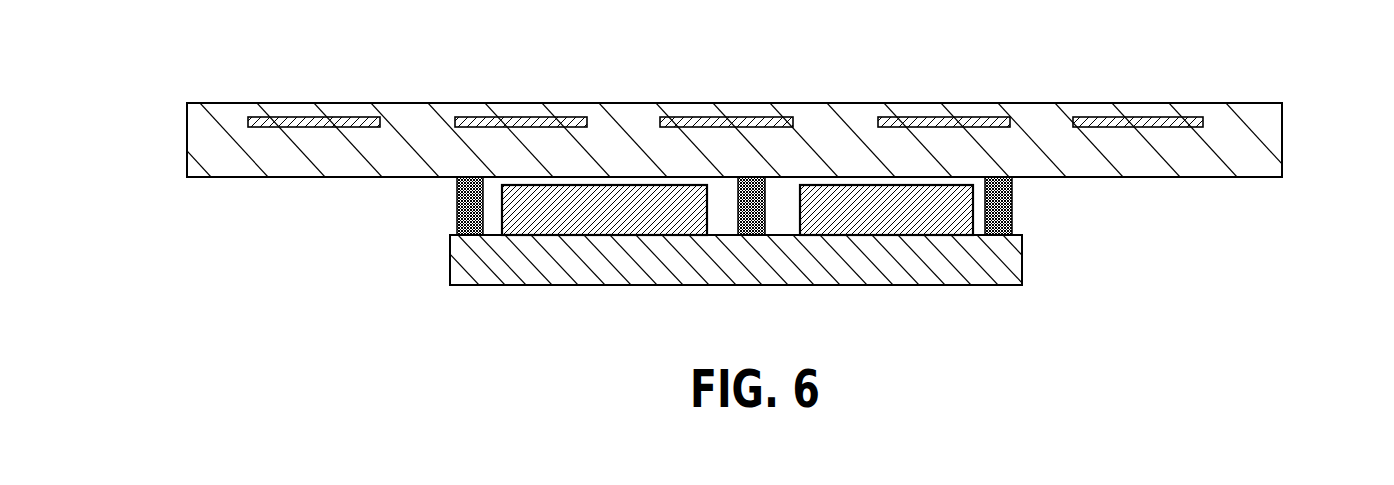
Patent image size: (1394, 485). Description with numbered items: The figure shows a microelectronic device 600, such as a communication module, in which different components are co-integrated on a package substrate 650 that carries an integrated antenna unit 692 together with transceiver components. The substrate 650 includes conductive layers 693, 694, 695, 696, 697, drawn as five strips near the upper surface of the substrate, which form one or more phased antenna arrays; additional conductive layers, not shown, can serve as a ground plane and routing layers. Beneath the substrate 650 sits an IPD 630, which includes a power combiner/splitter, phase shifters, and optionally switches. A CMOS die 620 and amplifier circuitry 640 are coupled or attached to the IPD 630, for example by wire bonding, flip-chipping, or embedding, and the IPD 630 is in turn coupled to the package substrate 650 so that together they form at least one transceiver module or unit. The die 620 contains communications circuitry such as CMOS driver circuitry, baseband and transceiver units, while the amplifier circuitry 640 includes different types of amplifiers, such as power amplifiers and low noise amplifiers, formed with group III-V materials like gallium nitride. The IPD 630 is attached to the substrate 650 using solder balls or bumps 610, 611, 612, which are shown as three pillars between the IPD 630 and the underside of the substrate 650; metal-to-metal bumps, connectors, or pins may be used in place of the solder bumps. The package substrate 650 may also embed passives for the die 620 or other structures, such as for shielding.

The microelectronic device 600 is at (730, 26).
The integrated antenna unit 692 is at (160, 134).
The substrate 650 is at (1283, 120).
The conductive layer 693 is at (318, 120).
The conductive layer 694 is at (518, 120).
The conductive layer 695 is at (710, 120).
The conductive layer 696 is at (943, 120).
The conductive layer 697 is at (1113, 120).
The solder ball or bump 610 is at (457, 210).
The solder ball or bump 611 is at (758, 208).
The solder ball or bump 612 is at (1003, 205).
The CMOS die 620 is at (678, 222).
The IPD 630 is at (543, 287).
The amplifier circuitry 640 is at (922, 223).